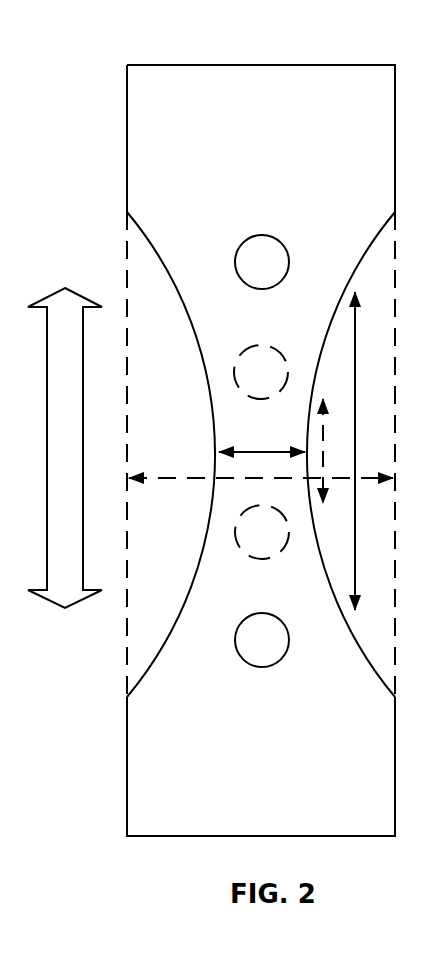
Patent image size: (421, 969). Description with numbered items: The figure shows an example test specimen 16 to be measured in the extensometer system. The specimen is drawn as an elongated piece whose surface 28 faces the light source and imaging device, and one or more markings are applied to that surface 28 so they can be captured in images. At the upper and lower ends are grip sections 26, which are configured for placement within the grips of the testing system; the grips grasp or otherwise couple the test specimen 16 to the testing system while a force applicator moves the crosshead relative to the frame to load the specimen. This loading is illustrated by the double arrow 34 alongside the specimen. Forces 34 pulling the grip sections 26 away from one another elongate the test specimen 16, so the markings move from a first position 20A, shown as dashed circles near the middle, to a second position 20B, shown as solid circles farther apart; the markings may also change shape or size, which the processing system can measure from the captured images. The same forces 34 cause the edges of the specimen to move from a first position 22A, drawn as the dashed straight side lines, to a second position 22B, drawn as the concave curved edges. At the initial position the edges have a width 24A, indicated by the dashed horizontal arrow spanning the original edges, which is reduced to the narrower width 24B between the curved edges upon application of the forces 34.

The test specimen 16 is at (341, 65).
The grip sections 26 is at (125, 118).
The surface 28 is at (270, 137).
The first position of the edges 22A is at (125, 250).
The second position of the edges 22B is at (202, 370).
The second position of the markings 20B is at (247, 236).
The first position of the markings 20A is at (267, 345).
The reduced width 24B is at (243, 450).
The initial width 24A is at (150, 478).
The forces 34 is at (80, 459).